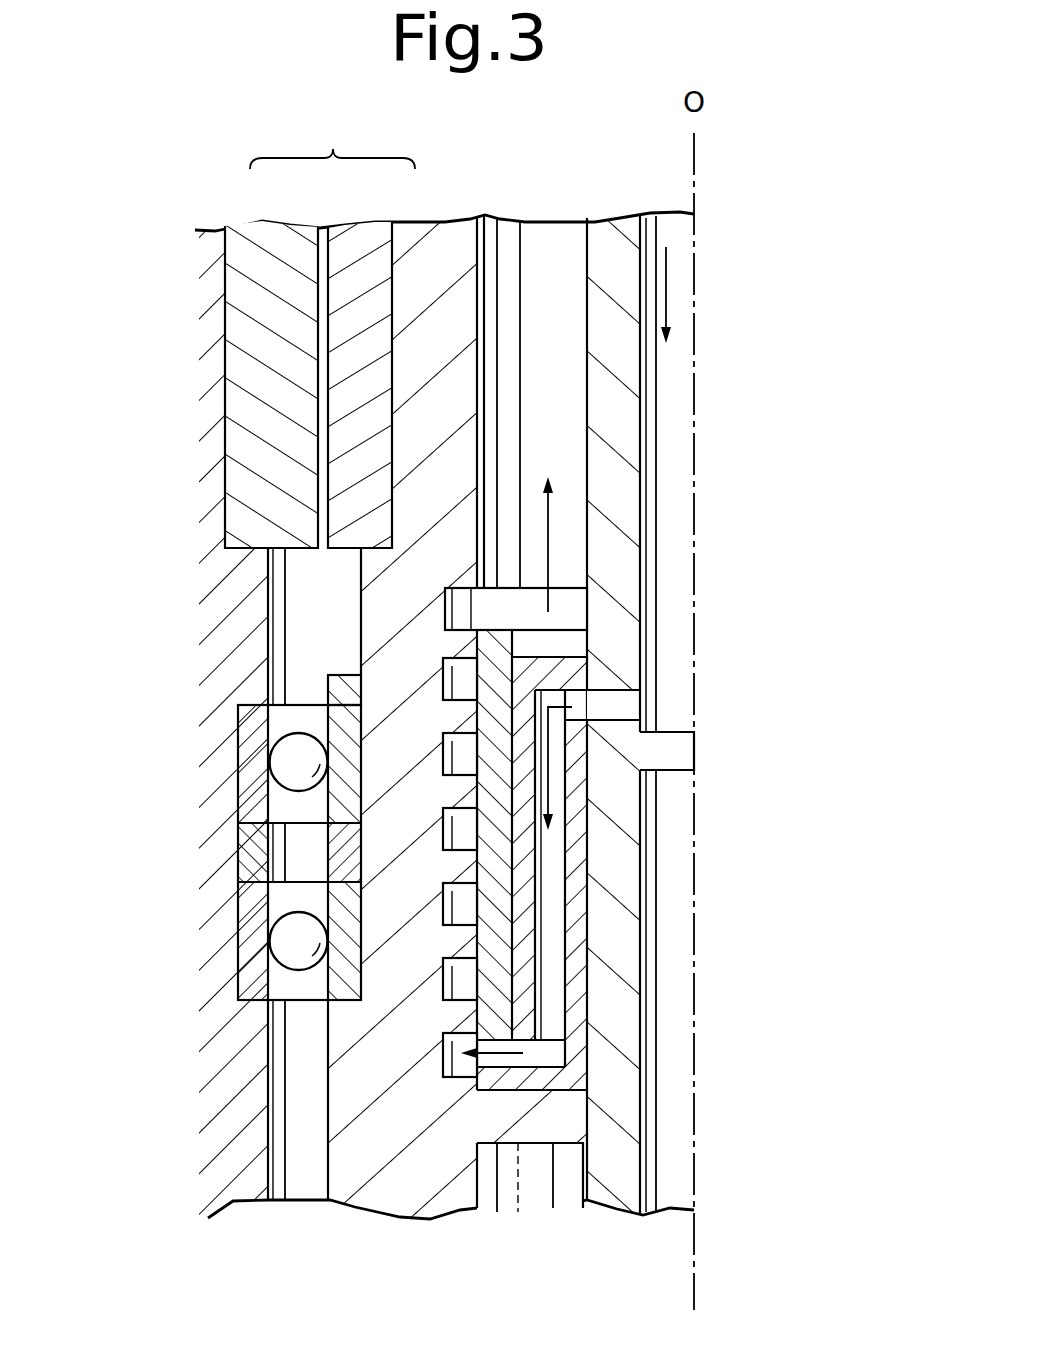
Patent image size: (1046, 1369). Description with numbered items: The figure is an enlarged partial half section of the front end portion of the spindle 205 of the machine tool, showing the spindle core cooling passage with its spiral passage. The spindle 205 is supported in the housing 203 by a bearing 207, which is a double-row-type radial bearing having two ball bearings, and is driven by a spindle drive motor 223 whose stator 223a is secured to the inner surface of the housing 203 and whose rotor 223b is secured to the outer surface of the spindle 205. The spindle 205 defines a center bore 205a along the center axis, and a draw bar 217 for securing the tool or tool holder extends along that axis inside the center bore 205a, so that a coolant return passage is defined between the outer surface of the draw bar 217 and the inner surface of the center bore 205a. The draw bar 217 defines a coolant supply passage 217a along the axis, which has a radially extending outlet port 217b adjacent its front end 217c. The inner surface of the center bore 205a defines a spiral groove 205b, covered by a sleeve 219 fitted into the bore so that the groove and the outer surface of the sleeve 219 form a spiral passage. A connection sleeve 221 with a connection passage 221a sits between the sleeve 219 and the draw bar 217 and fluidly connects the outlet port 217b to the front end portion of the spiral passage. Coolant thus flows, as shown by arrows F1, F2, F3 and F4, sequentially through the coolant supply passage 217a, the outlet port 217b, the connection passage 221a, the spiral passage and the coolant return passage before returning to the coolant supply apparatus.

The housing 203 is at (150, 678).
The spindle 205 is at (458, 245).
The center bore 205a is at (483, 268).
The spiral groove 205b is at (445, 1052).
The bearing 207 is at (238, 803).
The draw bar 217 is at (605, 245).
The coolant supply passage 217a is at (642, 383).
The outlet port 217b is at (607, 707).
The front end 217c is at (670, 752).
The sleeve 219 is at (495, 650).
The connection sleeve 221 is at (566, 1080).
The connection passage 221a is at (557, 915).
The spindle drive motor 223 is at (332, 142).
The stator 223a is at (298, 243).
The rotor 223b is at (364, 240).
The coolant flow arrow F1 is at (666, 265).
The coolant flow arrow F2 is at (553, 783).
The coolant flow arrow F3 is at (498, 1060).
The coolant flow arrow F4 is at (550, 522).